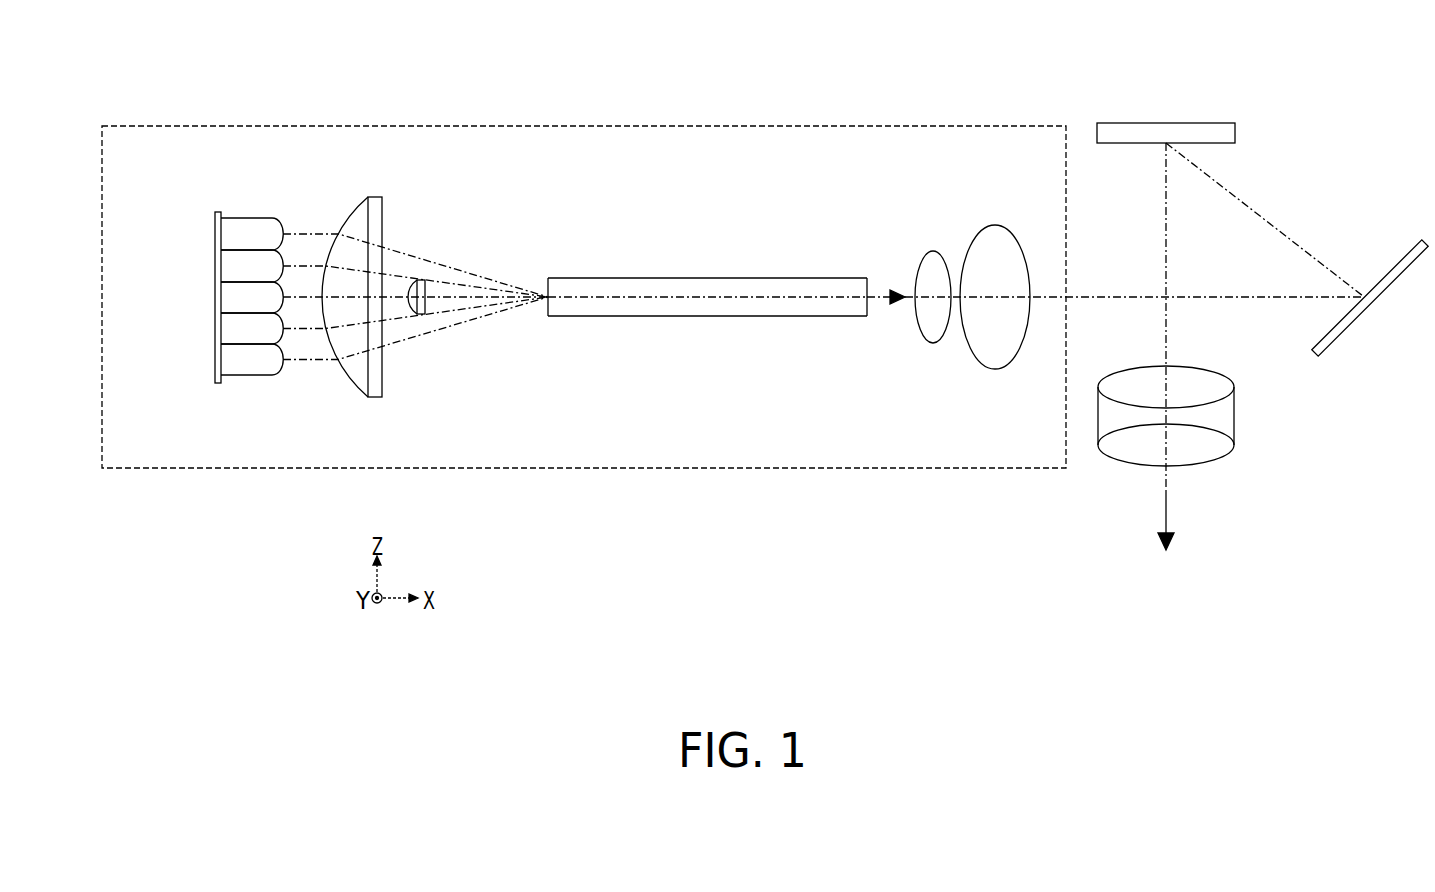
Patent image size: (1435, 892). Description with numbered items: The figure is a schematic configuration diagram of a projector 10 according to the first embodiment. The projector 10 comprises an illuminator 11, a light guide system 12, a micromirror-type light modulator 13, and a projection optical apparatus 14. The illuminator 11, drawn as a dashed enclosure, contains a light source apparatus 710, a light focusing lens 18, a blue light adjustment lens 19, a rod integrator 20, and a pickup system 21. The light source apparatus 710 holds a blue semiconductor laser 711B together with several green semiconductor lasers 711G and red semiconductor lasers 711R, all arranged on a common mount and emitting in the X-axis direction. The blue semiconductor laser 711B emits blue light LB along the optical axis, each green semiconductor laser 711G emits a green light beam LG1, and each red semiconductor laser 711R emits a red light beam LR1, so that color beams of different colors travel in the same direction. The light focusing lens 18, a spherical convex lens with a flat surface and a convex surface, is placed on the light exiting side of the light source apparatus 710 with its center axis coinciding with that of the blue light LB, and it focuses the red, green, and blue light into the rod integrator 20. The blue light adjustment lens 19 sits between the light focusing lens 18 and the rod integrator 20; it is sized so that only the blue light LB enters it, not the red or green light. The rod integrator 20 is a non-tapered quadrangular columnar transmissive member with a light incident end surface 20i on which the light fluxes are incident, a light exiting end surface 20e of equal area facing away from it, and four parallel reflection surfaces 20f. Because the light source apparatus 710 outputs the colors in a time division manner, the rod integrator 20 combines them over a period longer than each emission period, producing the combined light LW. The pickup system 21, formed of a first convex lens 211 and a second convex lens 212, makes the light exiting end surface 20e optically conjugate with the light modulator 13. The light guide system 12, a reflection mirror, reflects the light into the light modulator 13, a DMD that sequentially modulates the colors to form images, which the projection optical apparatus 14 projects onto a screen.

The projector 10 is at (765, 280).
The illuminator 11 is at (845, 469).
The light guide system 12 is at (1397, 275).
The micromirror-type light modulator 13 is at (1142, 132).
The projection optical apparatus 14 is at (1222, 413).
The light focusing lens 18 is at (362, 215).
The blue light adjustment lens 19 is at (410, 290).
The rod integrator 20 is at (713, 301).
The light incident end surface 20i is at (540, 308).
The reflection surfaces 20f is at (727, 317).
The light exiting end surface 20e is at (868, 304).
The pickup system 21 is at (961, 199).
The first convex lens 211 is at (935, 251).
The second convex lens 212 is at (995, 225).
The light source apparatus 710 is at (240, 192).
The green semiconductor lasers 711G is at (232, 234).
The red semiconductor lasers 711R is at (230, 266).
The blue semiconductor laser 711B is at (230, 298).
The green light beam LG1 is at (292, 232).
The red light beam LR1 is at (313, 264).
The blue light LB is at (313, 300).
The light LW is at (880, 294).